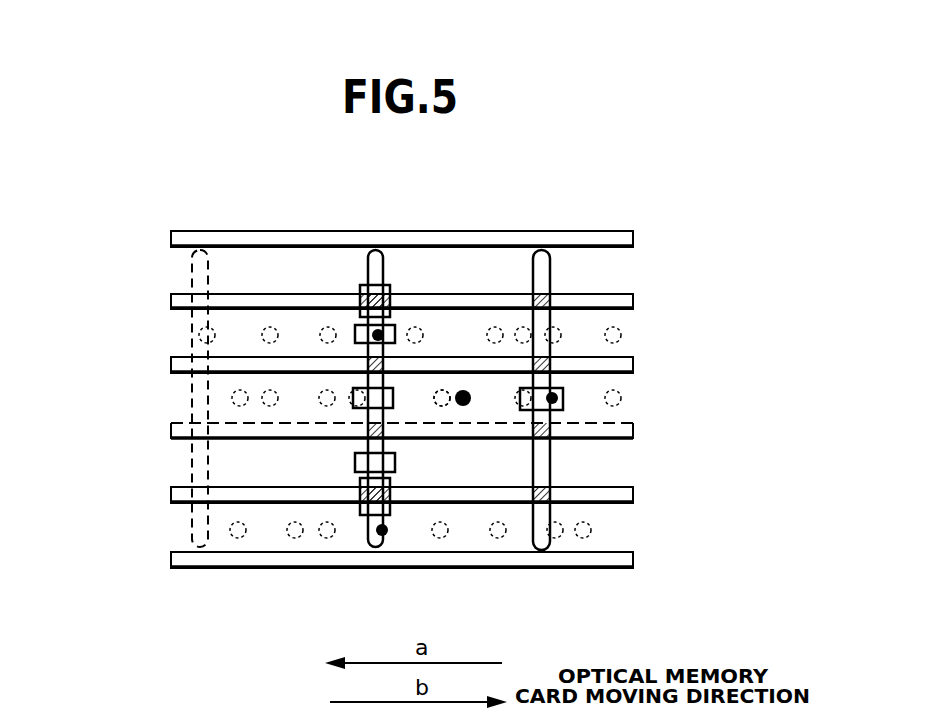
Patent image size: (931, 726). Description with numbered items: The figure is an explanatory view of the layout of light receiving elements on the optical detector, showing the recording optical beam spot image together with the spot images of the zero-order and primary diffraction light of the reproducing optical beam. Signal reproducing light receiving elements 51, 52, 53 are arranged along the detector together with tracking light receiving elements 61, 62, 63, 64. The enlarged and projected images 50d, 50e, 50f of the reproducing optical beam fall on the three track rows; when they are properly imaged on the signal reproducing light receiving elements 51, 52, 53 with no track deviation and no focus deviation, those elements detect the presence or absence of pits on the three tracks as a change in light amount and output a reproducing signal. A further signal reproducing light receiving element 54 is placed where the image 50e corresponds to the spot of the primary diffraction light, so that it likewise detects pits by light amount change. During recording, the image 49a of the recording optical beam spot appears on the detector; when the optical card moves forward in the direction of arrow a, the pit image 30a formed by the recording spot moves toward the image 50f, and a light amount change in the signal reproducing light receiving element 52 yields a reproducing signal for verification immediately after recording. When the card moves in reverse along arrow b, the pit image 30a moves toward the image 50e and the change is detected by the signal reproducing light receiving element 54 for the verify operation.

The pit image 30a is at (448, 392).
The image of the recording optical beam spot 49a is at (470, 404).
The enlarged and projected image of the reproducing optical beam 50d is at (368, 543).
The enlarged and projected image of the reproducing optical beam 50e is at (547, 550).
The enlarged and projected image of the reproducing optical beam 50f is at (200, 547).
The signal reproducing light receiving element 51 is at (355, 330).
The signal reproducing light receiving element 52 is at (353, 393).
The signal reproducing light receiving element 53 is at (355, 462).
The signal reproducing light receiving element 54 is at (563, 397).
The tracking light receiving element 61 is at (388, 288).
The tracking light receiving element 62 is at (390, 320).
The tracking light receiving element 63 is at (392, 480).
The tracking light receiving element 64 is at (388, 522).